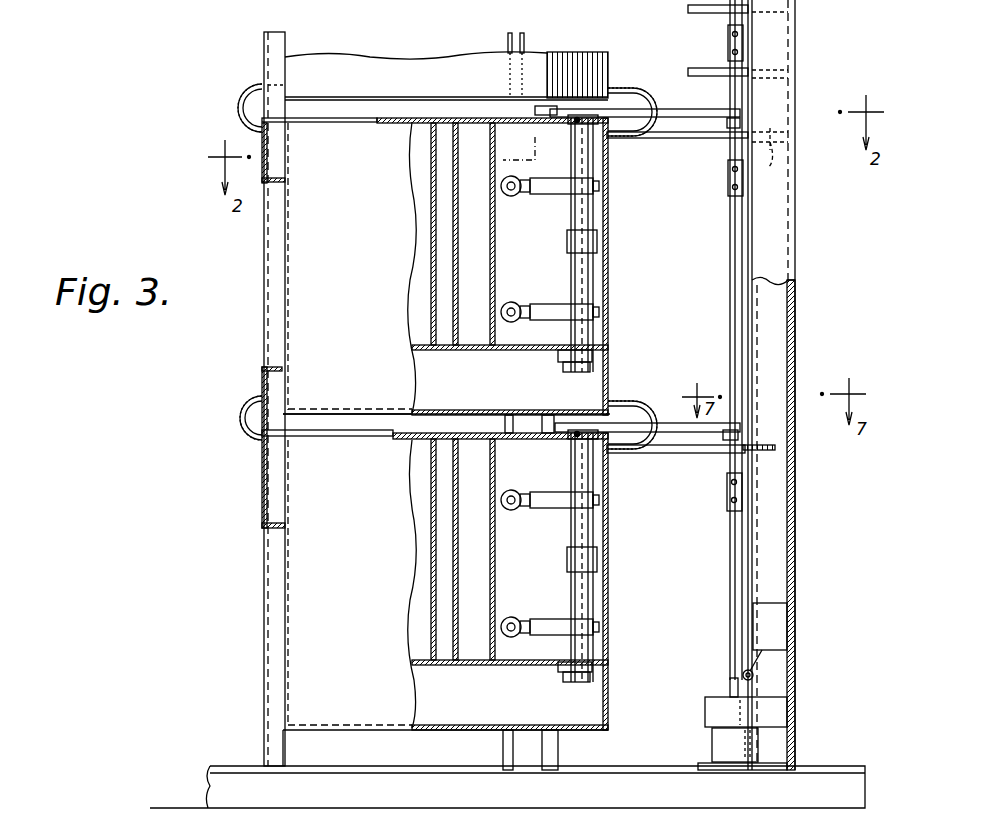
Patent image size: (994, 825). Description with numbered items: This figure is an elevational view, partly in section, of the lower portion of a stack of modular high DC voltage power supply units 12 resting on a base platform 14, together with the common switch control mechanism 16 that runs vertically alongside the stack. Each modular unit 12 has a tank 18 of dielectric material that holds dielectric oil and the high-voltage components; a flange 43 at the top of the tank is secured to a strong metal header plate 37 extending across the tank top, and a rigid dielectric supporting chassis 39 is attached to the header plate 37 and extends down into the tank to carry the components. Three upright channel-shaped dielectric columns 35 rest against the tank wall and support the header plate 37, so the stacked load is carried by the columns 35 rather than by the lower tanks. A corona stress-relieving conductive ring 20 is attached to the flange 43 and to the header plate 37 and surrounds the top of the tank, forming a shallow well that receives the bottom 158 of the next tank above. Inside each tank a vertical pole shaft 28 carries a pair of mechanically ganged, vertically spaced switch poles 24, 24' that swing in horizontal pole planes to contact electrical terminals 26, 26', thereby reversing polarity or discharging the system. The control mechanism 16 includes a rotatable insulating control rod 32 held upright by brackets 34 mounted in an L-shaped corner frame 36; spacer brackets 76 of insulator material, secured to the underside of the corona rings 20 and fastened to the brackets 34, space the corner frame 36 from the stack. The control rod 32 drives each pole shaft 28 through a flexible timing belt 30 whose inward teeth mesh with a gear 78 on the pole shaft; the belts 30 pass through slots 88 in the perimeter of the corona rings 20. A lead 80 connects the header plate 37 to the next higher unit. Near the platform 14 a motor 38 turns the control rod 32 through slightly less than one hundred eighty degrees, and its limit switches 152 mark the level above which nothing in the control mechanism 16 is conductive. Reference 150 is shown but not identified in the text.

The modular high DC voltage power supply unit 12 is at (240, 342).
The base platform 14 is at (224, 765).
The common switch control mechanism 16 is at (812, 62).
The tank 18 is at (354, 62).
The corona stress-relieving conductive ring 20 is at (243, 90).
The switch arm or pole 24 is at (559, 361).
The switch arm or pole 24' is at (559, 454).
The electrical terminal 26 is at (517, 346).
The electrical terminal 26' is at (515, 447).
The pole shaft 28 is at (592, 225).
The flexible timing belt 30 is at (672, 108).
The control rod 32 is at (729, 606).
The bracket 34 is at (790, 160).
The upright column 35 is at (258, 612).
The L-shaped corner frame 36 is at (792, 250).
The header plate 37 is at (390, 128).
The motor 38 is at (712, 735).
The supporting chassis 39 is at (420, 247).
The flange 43 is at (256, 120).
The spacer bracket 76 is at (680, 142).
The gear 78 is at (580, 114).
The lead 80 is at (727, 112).
The slot 88 is at (660, 92).
The pivot direction 150 is at (247, 400).
The limit switch 152 is at (768, 632).
The bottom of the next tank 158 is at (385, 412).